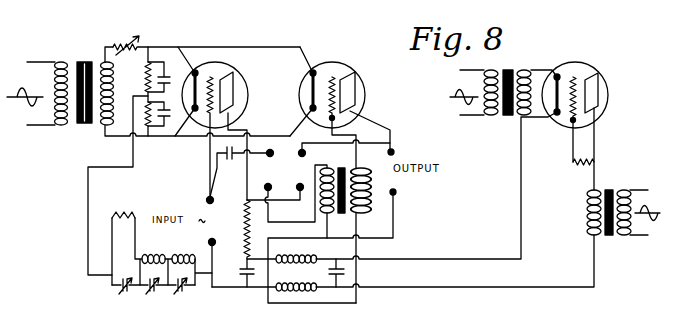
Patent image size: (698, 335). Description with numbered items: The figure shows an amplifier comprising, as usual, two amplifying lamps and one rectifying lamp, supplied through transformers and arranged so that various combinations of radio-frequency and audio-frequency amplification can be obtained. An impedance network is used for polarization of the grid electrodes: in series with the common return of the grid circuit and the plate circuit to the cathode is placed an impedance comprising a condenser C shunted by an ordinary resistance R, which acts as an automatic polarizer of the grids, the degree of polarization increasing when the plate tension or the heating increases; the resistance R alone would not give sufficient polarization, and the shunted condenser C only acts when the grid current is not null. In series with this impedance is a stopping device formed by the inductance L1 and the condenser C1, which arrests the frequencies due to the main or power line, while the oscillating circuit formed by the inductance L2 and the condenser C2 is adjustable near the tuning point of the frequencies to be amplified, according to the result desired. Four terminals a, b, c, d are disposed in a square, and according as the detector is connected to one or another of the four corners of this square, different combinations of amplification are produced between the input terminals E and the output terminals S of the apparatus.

The resistance R is at (353, 198).
The stopping device inductance L1 is at (153, 252).
The oscillating circuit inductance L2 is at (183, 252).
The condenser C is at (122, 294).
The stopping device condenser C1 is at (151, 294).
The oscillating circuit condenser C2 is at (181, 294).
The input terminal E is at (217, 240).
The terminal a is at (265, 163).
The terminal b is at (298, 163).
The terminal c is at (275, 185).
The terminal d is at (302, 182).
The output terminal S is at (416, 179).